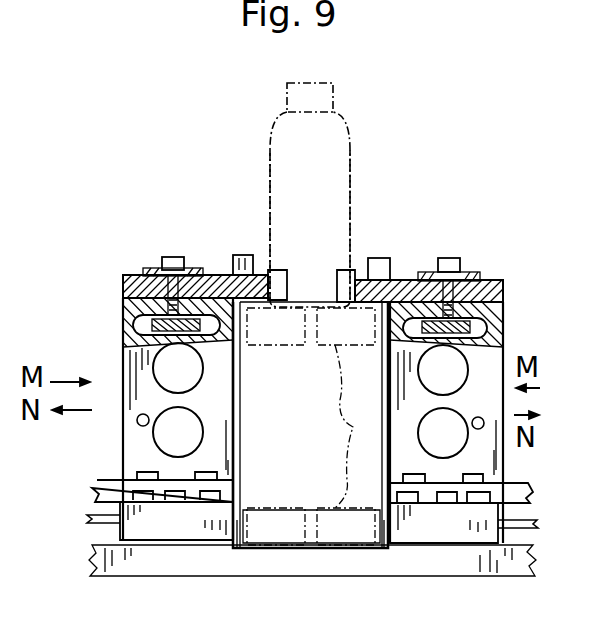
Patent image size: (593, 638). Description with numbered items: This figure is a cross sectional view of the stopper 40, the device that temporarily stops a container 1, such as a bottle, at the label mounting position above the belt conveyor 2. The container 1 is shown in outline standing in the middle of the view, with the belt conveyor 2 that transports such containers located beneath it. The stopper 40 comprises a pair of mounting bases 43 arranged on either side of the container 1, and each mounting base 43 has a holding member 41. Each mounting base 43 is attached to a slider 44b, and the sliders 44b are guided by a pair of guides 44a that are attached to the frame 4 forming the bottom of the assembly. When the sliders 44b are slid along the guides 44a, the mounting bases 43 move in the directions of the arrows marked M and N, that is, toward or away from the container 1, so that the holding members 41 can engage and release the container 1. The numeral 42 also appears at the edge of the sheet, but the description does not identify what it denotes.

The container 1 is at (345, 233).
The belt conveyor 2 is at (310, 425).
The frame 4 is at (185, 567).
The stopper 40 is at (362, 120).
The holding member 41 is at (228, 272).
The member 42 is at (38, 9).
The mounting base 43 is at (123, 283).
The guide 44a is at (92, 527).
The slider 44b is at (130, 513).